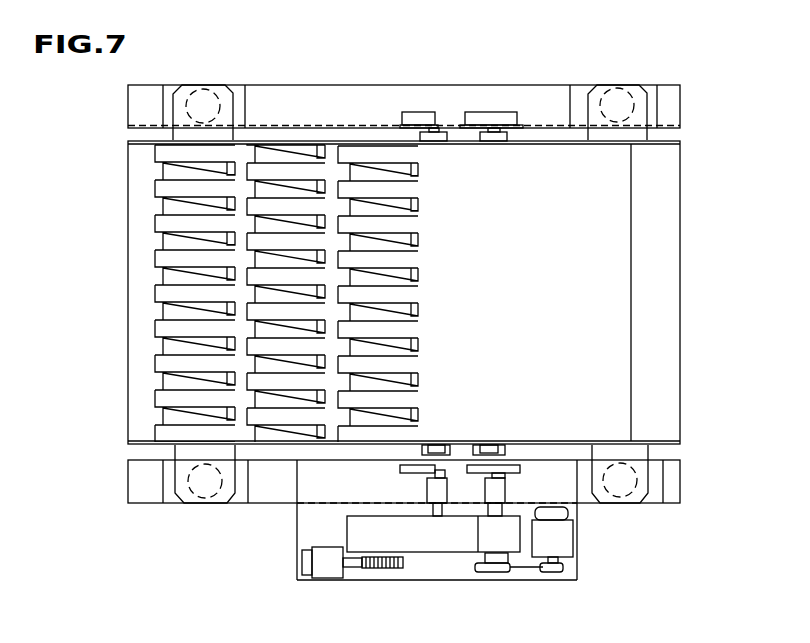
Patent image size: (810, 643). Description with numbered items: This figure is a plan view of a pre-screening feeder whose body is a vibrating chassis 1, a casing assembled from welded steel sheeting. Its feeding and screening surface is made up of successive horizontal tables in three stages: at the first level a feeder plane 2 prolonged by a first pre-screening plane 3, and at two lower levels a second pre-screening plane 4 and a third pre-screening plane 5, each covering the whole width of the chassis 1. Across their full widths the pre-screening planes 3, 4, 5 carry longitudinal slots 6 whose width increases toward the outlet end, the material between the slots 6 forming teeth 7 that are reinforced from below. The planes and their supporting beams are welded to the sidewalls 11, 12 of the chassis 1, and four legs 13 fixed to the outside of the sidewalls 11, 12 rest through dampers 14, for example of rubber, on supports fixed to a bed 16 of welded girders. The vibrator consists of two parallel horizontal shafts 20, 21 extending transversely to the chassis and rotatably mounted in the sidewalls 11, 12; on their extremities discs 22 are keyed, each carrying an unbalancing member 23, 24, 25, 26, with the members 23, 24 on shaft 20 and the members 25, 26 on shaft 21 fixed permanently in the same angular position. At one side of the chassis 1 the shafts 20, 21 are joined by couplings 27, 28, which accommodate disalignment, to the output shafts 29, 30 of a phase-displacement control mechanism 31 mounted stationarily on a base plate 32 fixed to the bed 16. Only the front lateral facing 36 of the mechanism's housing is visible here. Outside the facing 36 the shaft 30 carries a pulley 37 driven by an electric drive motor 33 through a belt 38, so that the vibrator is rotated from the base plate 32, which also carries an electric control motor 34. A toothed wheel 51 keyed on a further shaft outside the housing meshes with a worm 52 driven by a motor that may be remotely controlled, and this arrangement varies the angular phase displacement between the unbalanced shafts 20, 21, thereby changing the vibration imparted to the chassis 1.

The vibrating chassis 1 is at (683, 228).
The feeder plane 2 is at (554, 185).
The first pre-screening plane 3 is at (362, 161).
The second pre-screening plane 4 is at (282, 176).
The third pre-screening plane 5 is at (199, 194).
The longitudinal slots 6 is at (167, 203).
The teeth 7 is at (163, 256).
The sidewall 11 is at (534, 138).
The sidewall 12 is at (554, 443).
The legs 13 is at (180, 92).
The dampers 14 is at (208, 98).
The bed 16 is at (313, 84).
The shaft 20 is at (434, 132).
The shaft 21 is at (493, 142).
The discs 22 is at (470, 126).
The unbalancing member 23 is at (410, 112).
The unbalancing member 24 is at (431, 446).
The unbalancing member 25 is at (498, 114).
The unbalancing member 26 is at (508, 446).
The coupling 27 is at (413, 468).
The coupling 28 is at (511, 474).
The output shaft 29 is at (425, 495).
The output shaft 30 is at (487, 488).
The phase-displacement control mechanism 31 is at (346, 528).
The base plate 32 is at (437, 568).
The electric drive motor 33 is at (574, 534).
The electric control motor 34 is at (303, 562).
The front lateral facing 36 is at (357, 518).
The pulley 37 is at (495, 572).
The belt 38 is at (544, 572).
The toothed wheel 51 is at (390, 568).
The worm 52 is at (369, 568).